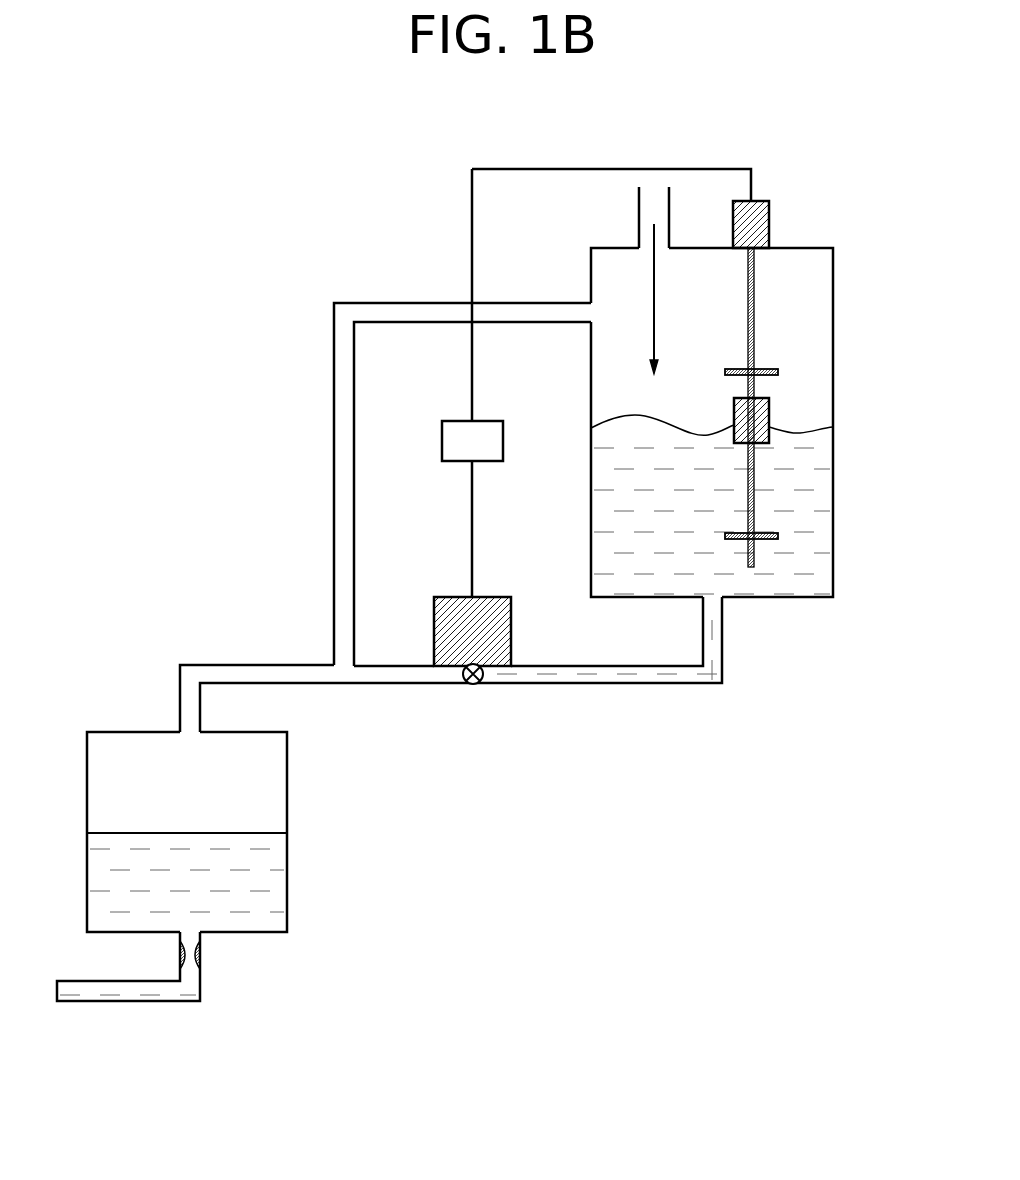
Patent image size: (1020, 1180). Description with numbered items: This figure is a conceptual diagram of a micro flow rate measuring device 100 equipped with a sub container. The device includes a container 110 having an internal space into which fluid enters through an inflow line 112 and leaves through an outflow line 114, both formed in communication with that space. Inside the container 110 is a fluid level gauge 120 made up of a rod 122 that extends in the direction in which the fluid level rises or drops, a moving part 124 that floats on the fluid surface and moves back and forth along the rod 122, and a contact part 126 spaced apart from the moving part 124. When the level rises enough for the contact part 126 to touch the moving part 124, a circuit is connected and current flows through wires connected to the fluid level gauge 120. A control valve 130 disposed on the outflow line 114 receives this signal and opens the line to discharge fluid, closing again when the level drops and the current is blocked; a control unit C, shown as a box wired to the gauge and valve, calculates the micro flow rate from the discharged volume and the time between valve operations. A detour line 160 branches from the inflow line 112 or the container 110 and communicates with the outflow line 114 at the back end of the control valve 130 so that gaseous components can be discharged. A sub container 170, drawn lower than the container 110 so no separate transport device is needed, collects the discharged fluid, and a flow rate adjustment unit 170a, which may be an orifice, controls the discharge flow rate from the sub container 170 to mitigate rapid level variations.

The micro flow rate measuring device 100 is at (432, 185).
The container 110 is at (833, 333).
The inflow line 112 is at (639, 212).
The outflow line 114 is at (380, 683).
The fluid level gauge 120 is at (786, 183).
The rod 122 is at (754, 354).
The moving part 124 is at (760, 427).
The contact part 126 is at (778, 372).
The control valve 130 is at (448, 597).
The detour line 160 is at (372, 303).
The sub container 170 is at (287, 773).
The flow rate adjustment unit 170a is at (197, 953).
The controller C is at (442, 437).